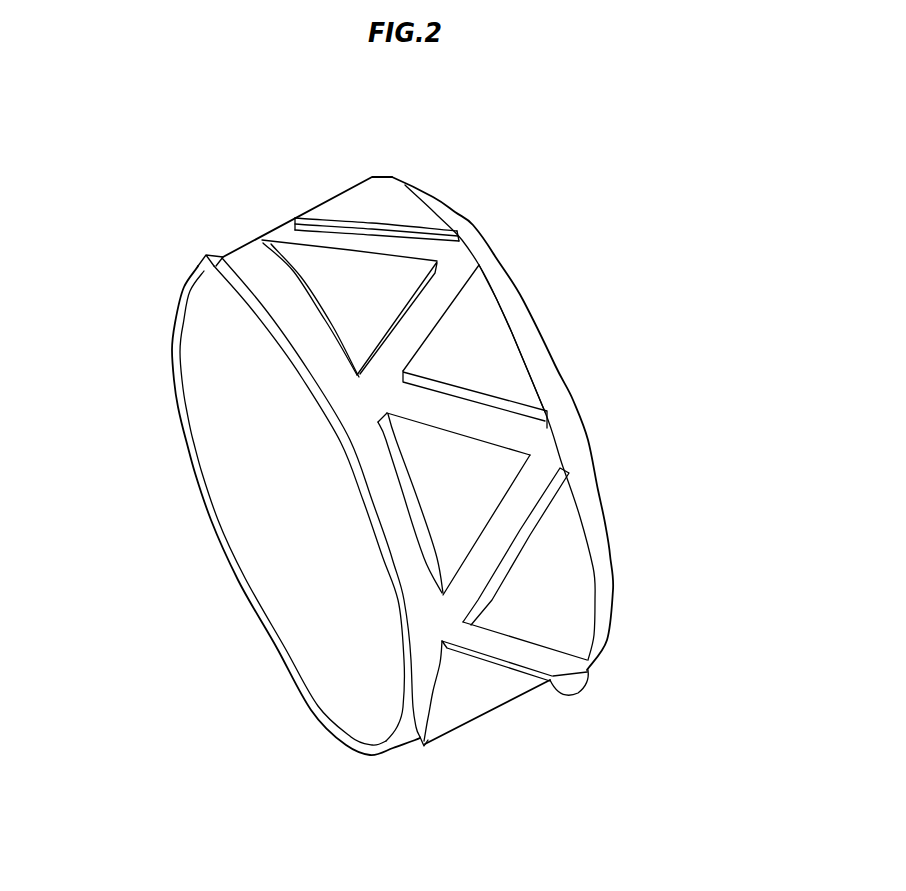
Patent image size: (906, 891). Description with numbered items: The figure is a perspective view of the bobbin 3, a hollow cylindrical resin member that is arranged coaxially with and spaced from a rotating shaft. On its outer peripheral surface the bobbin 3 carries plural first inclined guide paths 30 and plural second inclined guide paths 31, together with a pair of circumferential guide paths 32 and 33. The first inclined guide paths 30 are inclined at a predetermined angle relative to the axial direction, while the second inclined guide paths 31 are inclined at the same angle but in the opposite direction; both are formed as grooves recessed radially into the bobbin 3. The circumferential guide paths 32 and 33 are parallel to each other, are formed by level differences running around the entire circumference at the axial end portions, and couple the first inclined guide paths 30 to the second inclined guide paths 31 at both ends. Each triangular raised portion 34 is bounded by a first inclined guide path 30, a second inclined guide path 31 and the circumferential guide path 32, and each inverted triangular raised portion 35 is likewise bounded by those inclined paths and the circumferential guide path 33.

The bobbin 3 is at (259, 144).
The first inclined guide path 30 is at (412, 241).
The second inclined guide path 31 is at (425, 308).
The circumferential guide path 32 is at (283, 298).
The circumferential guide path 33 is at (590, 507).
The triangular raised portion 34 is at (295, 253).
The inverted triangular raised portion 35 is at (503, 340).